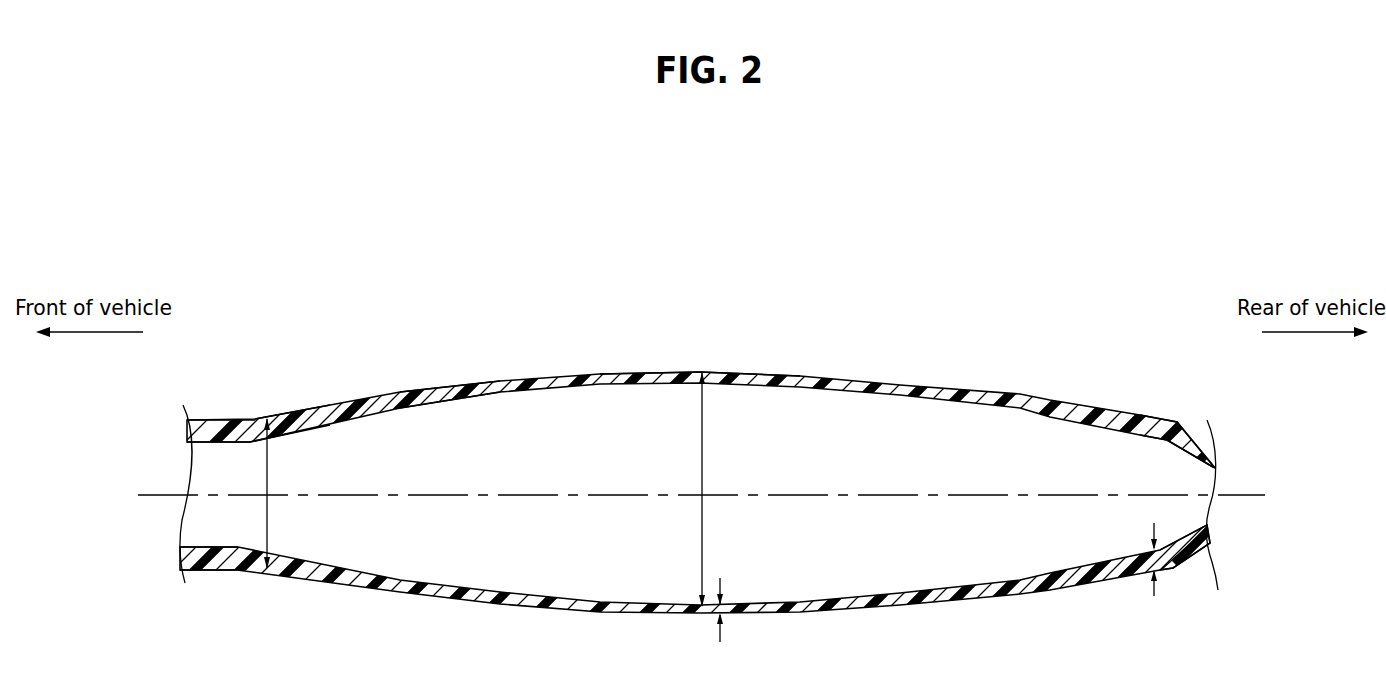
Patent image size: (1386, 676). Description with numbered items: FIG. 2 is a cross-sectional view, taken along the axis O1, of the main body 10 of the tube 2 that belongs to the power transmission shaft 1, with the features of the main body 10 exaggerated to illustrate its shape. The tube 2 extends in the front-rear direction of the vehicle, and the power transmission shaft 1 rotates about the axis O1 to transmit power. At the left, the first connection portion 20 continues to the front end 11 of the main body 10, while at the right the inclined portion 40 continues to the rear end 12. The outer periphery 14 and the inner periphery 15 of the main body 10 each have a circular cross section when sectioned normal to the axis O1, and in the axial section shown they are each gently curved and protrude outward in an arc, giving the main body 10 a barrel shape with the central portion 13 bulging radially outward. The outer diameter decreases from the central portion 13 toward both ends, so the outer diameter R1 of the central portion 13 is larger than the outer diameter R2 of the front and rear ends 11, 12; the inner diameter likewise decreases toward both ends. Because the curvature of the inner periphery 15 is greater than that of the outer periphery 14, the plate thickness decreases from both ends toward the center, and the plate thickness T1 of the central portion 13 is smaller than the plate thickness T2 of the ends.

The power transmission shaft 1 is at (971, 235).
The tube 2 is at (856, 289).
The main body 10 is at (964, 366).
The front end 11 is at (280, 418).
The rear end 12 is at (1150, 424).
The central portion 13 is at (690, 373).
The outer periphery 14 is at (457, 395).
The inner periphery 15 is at (434, 397).
The first connection portion 20 is at (210, 563).
The inclined portion 40 is at (1190, 548).
The axis O1 is at (150, 498).
The outer diameter of the central portion R1 is at (718, 489).
The outer diameter of both ends R2 is at (285, 493).
The plate thickness of the central portion T1 is at (736, 617).
The plate thickness of both ends T2 is at (1138, 568).